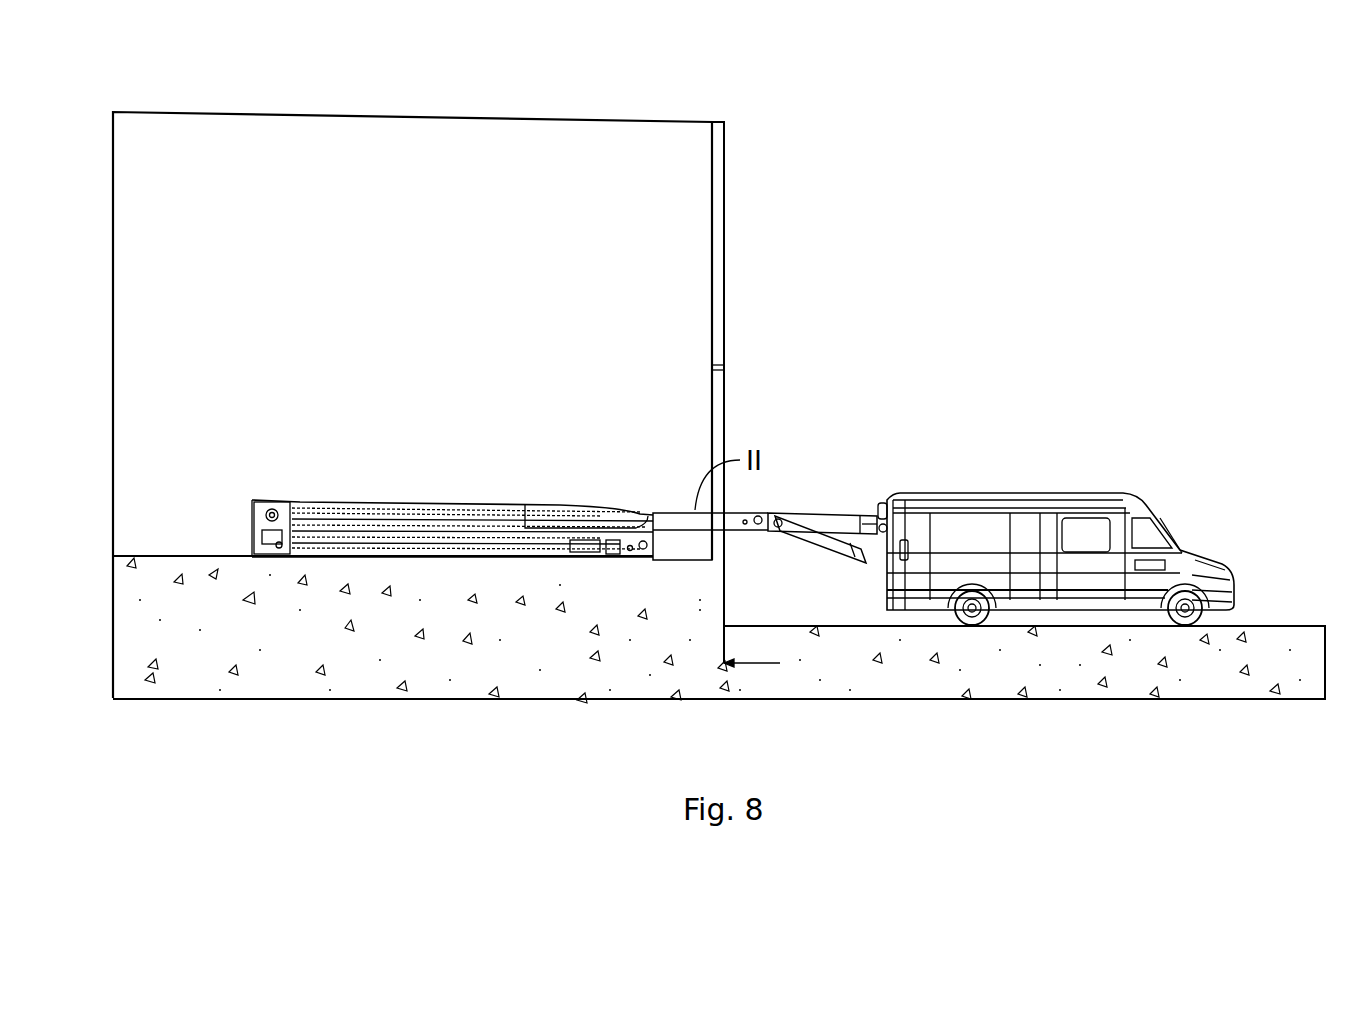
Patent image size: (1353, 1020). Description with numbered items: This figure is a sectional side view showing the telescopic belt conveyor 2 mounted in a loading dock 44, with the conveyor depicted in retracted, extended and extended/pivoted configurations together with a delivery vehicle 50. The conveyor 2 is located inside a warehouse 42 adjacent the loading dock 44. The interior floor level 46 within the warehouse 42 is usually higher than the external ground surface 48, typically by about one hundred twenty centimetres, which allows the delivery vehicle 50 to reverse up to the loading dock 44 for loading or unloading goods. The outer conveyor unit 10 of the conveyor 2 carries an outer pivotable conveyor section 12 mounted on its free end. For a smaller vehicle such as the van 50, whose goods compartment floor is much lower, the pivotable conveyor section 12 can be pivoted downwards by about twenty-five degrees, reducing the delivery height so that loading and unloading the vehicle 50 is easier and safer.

The telescopic belt conveyor 2 is at (341, 502).
The outer conveyor unit 10 is at (678, 517).
The outer pivotable conveyor section 12 is at (830, 512).
The warehouse 42 is at (718, 198).
The loading dock 44 is at (717, 402).
The interior floor level 46 is at (147, 557).
The external ground surface 48 is at (1280, 633).
The delivery vehicle 50 is at (1052, 492).